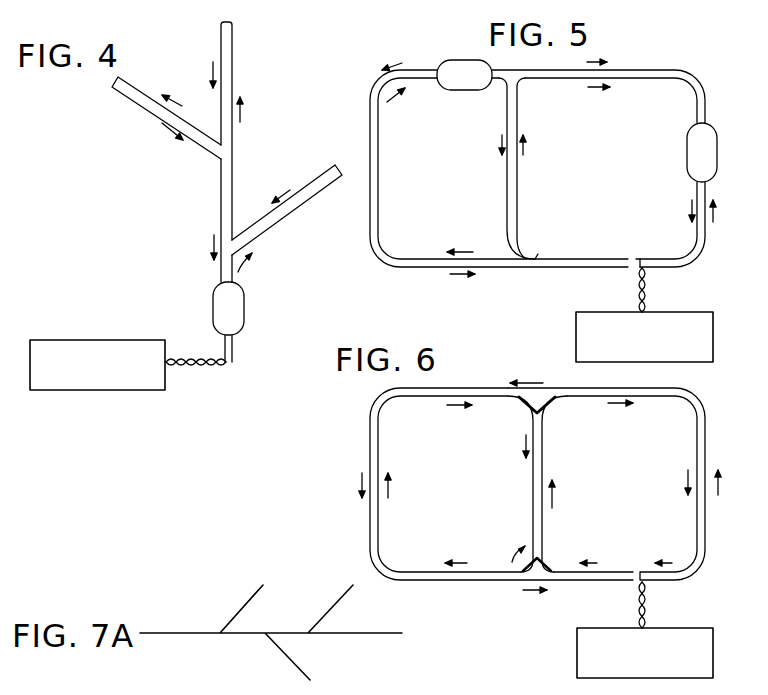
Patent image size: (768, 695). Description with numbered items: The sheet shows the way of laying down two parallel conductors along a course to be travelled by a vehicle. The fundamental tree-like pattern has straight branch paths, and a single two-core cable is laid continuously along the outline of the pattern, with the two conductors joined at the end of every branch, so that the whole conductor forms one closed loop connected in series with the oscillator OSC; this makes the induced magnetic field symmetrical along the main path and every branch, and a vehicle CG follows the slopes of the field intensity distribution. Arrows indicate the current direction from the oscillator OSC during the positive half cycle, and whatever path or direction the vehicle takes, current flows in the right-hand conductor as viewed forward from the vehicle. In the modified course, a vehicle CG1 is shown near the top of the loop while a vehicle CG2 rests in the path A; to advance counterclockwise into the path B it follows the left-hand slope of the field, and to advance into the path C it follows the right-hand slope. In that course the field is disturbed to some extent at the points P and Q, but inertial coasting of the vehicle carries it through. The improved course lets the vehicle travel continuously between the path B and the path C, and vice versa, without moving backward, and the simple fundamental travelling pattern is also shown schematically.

In FIG. 4, the vehicle CG is at (213, 300).
In FIG. 5, the vehicle CG1 is at (457, 80).
In FIG. 5, the vehicle CG2 is at (690, 147).
In FIG. 4, the oscillator OSC is at (120, 340).
In FIG. 5, the oscillator OSC is at (576, 323).
In FIG. 6, the oscillator OSC is at (577, 648).
In FIG. 5, the path A is at (702, 100).
In FIG. 6, the path A is at (705, 452).
In FIG. 5, the path B is at (517, 182).
In FIG. 6, the path B is at (542, 452).
In FIG. 5, the path C is at (378, 182).
In FIG. 6, the path C is at (378, 456).
In FIG. 5, the point P is at (540, 251).
In FIG. 5, the point Q is at (638, 257).